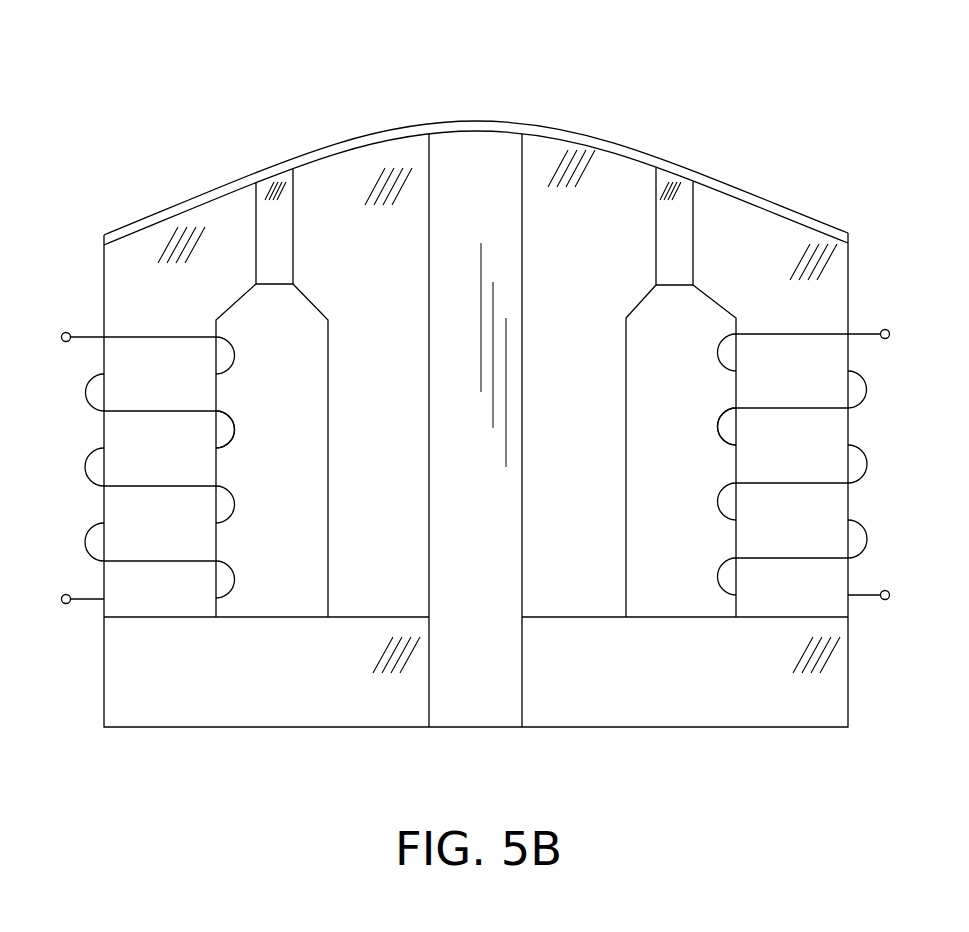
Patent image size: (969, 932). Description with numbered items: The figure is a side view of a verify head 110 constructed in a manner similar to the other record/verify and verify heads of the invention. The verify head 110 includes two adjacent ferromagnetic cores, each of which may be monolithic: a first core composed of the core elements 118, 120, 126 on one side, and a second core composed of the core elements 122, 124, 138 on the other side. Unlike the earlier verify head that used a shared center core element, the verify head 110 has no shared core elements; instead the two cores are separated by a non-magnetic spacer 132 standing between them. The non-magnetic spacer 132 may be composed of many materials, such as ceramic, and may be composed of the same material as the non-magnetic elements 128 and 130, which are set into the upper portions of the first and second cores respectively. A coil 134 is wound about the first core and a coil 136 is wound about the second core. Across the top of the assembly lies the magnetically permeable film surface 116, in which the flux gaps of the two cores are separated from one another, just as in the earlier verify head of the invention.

The verify head 110 is at (100, 181).
The magnetically permeable film surface 116 is at (475, 118).
The first core element 118 is at (180, 386).
The first core element 120 is at (403, 456).
The second core element 122 is at (589, 456).
The second core element 124 is at (812, 385).
The first core element 126 is at (293, 680).
The non-magnetic element 128 is at (277, 226).
The non-magnetic element 130 is at (675, 242).
The non-magnetic spacer 132 is at (477, 574).
The coil 134 is at (233, 428).
The coil 136 is at (718, 427).
The second core element 138 is at (668, 680).